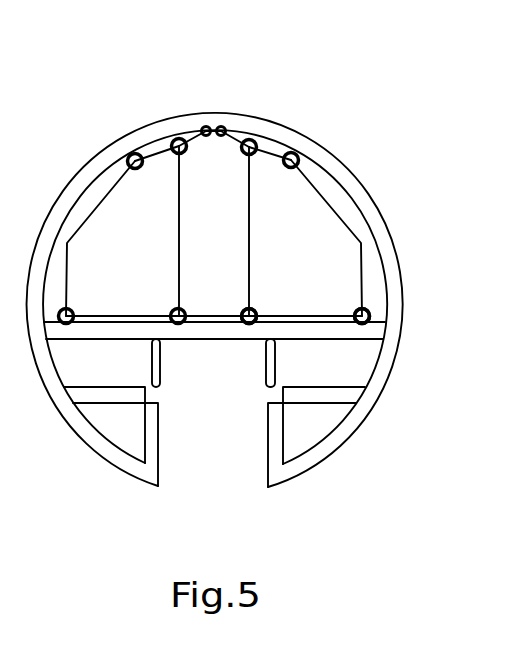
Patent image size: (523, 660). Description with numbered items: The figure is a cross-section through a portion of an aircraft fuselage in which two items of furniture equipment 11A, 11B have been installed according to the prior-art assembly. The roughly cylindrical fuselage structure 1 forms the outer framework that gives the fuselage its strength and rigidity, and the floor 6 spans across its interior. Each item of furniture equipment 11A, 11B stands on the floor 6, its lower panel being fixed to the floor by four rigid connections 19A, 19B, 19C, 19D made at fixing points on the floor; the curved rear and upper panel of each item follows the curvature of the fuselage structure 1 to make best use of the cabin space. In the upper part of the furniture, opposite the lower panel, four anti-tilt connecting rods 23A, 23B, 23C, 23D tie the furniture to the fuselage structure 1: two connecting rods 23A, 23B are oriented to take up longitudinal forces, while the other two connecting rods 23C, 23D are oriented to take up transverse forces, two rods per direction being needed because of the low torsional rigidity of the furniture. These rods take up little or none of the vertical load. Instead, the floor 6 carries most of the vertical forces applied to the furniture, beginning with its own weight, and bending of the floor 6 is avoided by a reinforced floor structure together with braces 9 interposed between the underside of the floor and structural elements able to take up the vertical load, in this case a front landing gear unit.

The fuselage structure 1 is at (368, 208).
The floor 6 is at (338, 337).
The braces 9 is at (272, 362).
The item of furniture equipment 11A is at (300, 208).
The item of furniture equipment 11B is at (103, 218).
The rigid connection 19A is at (249, 325).
The rigid connection 19B is at (356, 311).
The rigid connection 19C is at (249, 325).
The rigid connection 19D is at (356, 311).
The anti-tilt connecting rod 23A is at (250, 139).
The anti-tilt connecting rod 23B is at (294, 152).
The anti-tilt connecting rod 23C is at (237, 136).
The anti-tilt connecting rod 23D is at (237, 136).